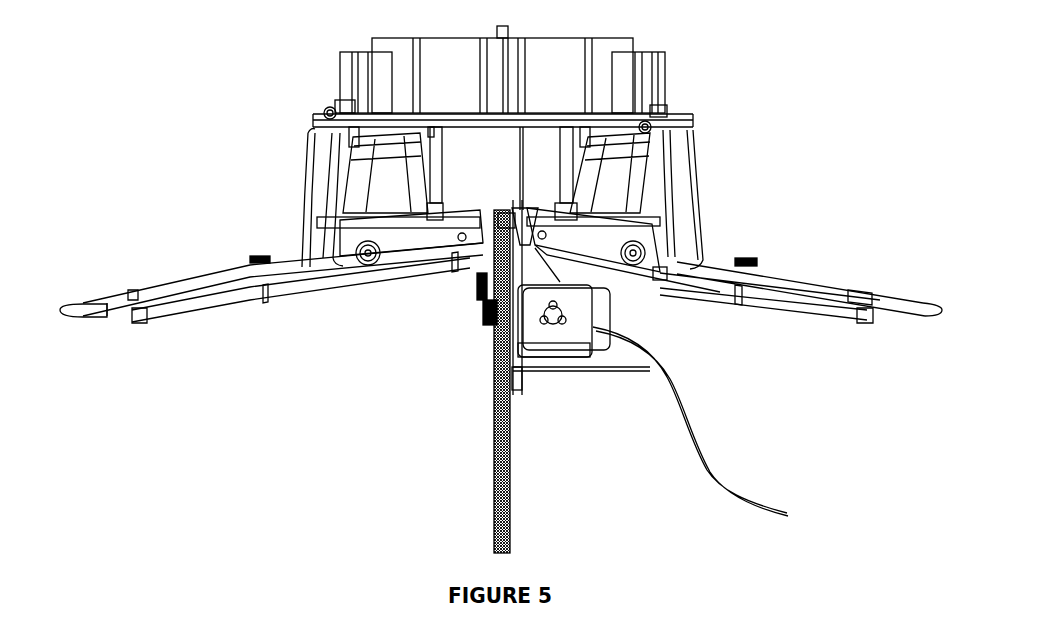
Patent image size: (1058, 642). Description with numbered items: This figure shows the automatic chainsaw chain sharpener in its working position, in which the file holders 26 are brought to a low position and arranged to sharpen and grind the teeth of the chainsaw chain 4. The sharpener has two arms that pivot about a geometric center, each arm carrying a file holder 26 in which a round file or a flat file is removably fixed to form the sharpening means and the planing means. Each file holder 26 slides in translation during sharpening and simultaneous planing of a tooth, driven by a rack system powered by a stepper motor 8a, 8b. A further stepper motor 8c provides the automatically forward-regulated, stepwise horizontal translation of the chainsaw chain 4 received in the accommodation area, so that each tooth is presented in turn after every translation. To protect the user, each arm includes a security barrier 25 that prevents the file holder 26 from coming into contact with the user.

The chainsaw chain 4 is at (500, 493).
The stepper motor 8a is at (395, 180).
The stepper motor 8b is at (607, 178).
The stepper motor 8c is at (593, 318).
The security barrier 25 is at (82, 317).
The file holder 26 is at (148, 290).